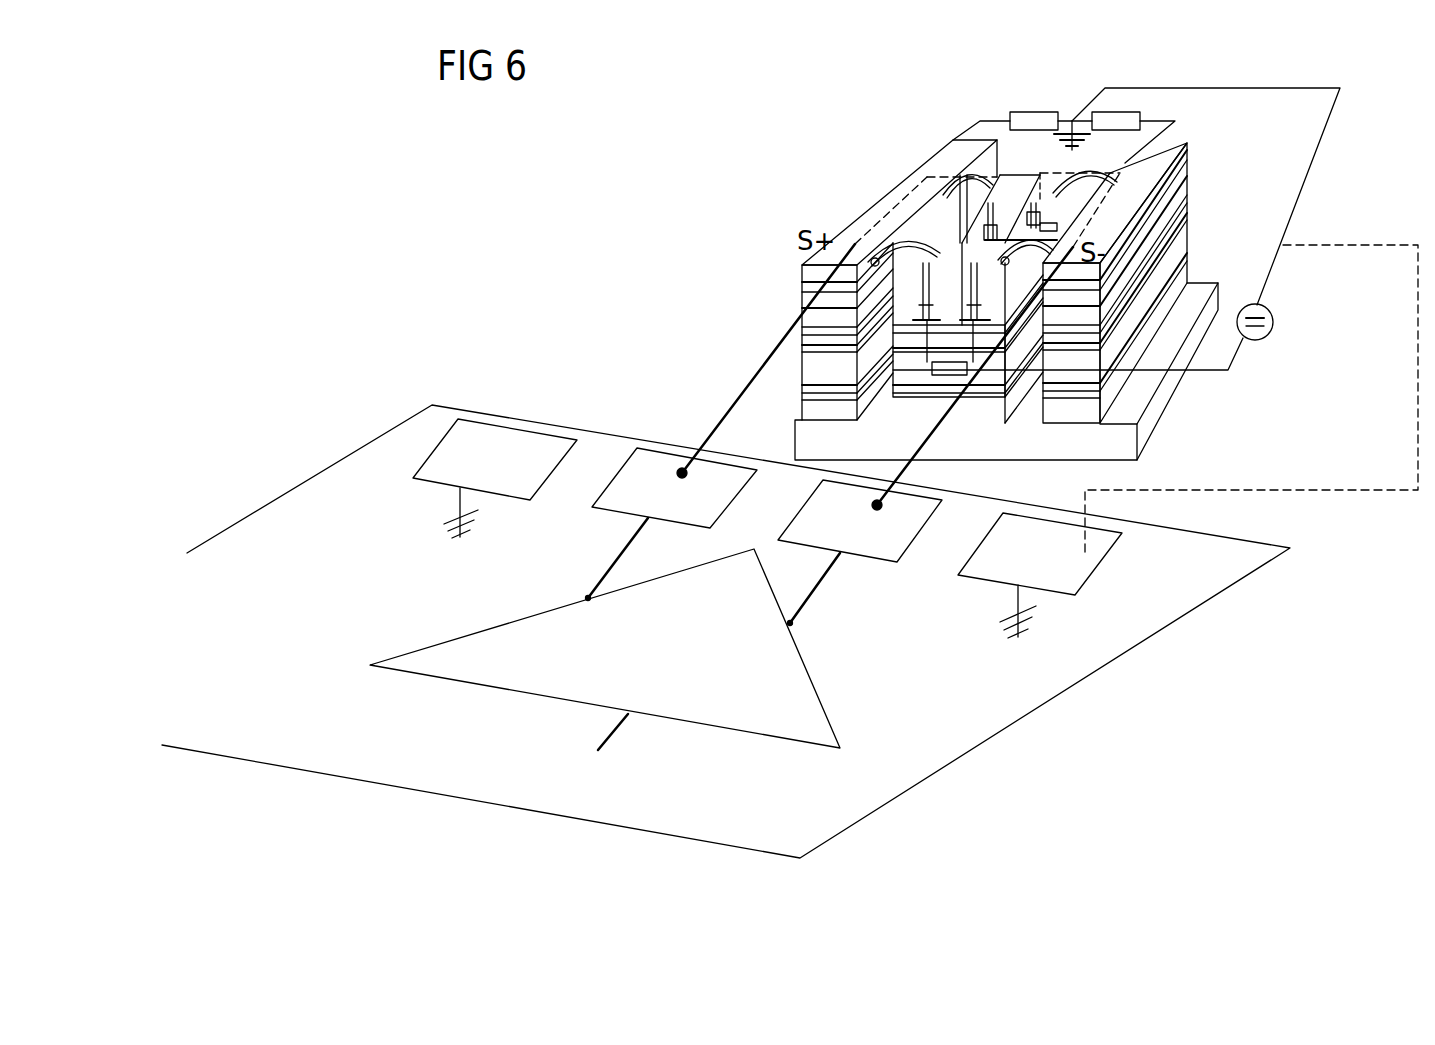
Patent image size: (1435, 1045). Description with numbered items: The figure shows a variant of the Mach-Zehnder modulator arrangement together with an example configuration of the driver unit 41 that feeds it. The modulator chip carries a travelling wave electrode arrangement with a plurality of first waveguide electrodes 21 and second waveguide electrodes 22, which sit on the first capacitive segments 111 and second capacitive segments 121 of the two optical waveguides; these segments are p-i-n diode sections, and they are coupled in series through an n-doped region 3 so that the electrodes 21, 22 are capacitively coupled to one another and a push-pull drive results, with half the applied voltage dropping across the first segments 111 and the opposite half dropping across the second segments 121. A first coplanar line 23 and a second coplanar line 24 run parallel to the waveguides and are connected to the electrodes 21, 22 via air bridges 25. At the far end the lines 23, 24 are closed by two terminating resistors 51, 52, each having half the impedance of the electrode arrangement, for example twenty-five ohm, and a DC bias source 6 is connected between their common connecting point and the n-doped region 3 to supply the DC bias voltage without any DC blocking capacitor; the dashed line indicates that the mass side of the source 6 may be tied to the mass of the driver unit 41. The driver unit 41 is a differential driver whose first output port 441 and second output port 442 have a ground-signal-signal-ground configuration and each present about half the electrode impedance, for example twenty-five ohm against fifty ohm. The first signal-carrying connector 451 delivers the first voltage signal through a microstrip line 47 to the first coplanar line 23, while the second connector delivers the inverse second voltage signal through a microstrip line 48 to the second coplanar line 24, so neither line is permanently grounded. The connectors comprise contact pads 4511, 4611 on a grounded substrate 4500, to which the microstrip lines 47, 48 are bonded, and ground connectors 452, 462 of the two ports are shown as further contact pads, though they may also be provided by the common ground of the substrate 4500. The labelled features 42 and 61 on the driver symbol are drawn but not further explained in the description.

The n-doped region 3 is at (992, 380).
The DC bias source 6 is at (1268, 340).
The first waveguide electrodes 21 is at (952, 243).
The second waveguide electrodes 22 is at (998, 230).
The first coplanar line 23 is at (897, 212).
The second coplanar line 24 is at (1152, 182).
The air bridges 25 is at (1082, 174).
The driver unit 41 is at (806, 690).
The output line 42 is at (630, 716).
The microstrip line 47 is at (728, 402).
The microstrip line 48 is at (901, 473).
The terminating resistor 51 is at (1023, 112).
The terminating resistor 52 is at (1112, 112).
The amplifier input terminal 61 is at (790, 623).
The first capacitive segments 111 is at (918, 322).
The second capacitive segments 121 is at (975, 322).
The first output port 441 is at (535, 594).
The second output port 442 is at (848, 597).
The first signal-carrying connector 451 is at (588, 598).
The ground connector 452 is at (473, 440).
The ground connector 462 is at (1065, 573).
The substrate 4500 is at (990, 705).
The contact pad 4511 is at (725, 492).
The contact pad 4611 is at (903, 522).